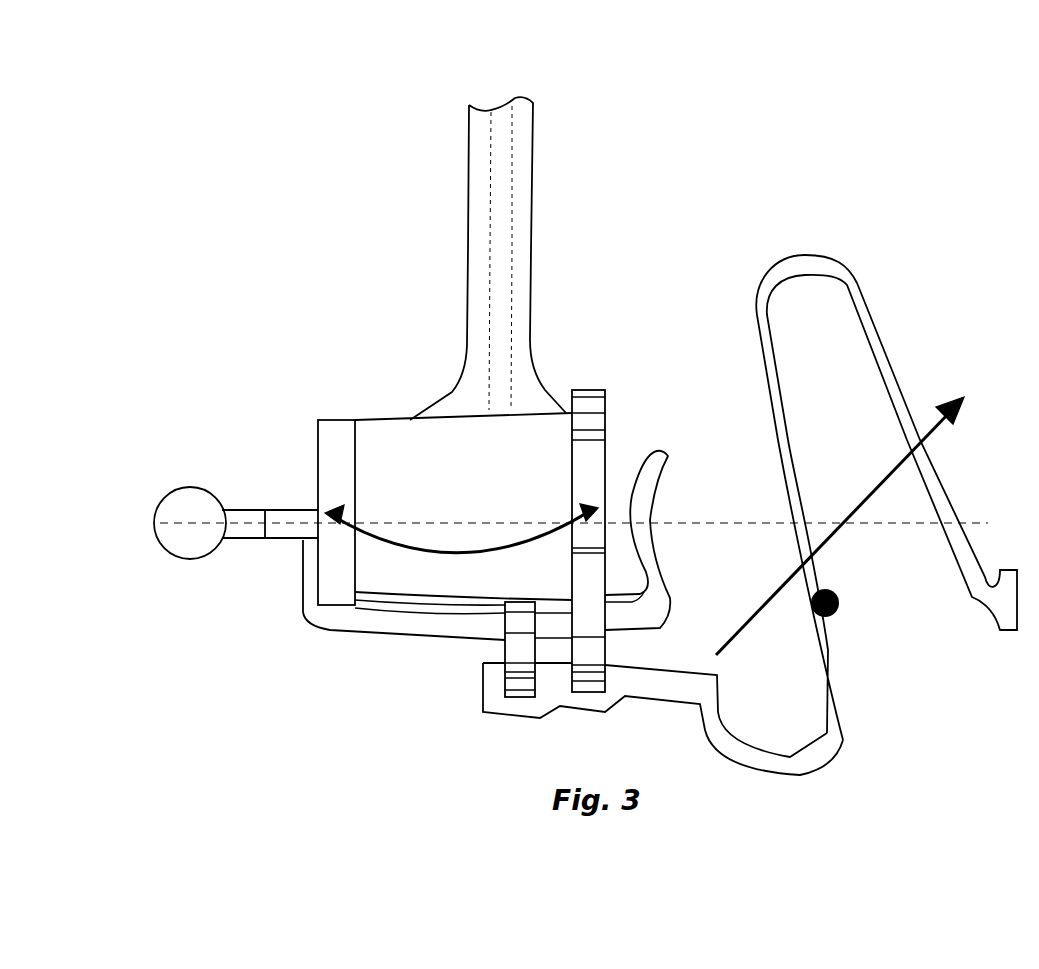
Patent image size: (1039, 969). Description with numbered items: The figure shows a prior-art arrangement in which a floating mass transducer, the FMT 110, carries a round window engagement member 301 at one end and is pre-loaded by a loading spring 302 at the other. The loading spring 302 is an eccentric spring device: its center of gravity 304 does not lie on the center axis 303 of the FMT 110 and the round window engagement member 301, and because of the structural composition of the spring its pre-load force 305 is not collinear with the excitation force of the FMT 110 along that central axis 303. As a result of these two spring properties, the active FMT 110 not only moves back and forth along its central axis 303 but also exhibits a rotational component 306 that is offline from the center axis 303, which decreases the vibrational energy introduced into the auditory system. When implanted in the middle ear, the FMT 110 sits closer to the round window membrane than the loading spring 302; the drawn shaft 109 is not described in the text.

The shaft 109 is at (473, 161).
The FMT 110 is at (395, 372).
The round window engagement member 301 is at (203, 488).
The loading spring 302 is at (717, 279).
The center axis 303 is at (283, 539).
The center of gravity 304 is at (839, 610).
The pre-load force 305 is at (875, 488).
The rotational component 306 is at (461, 544).